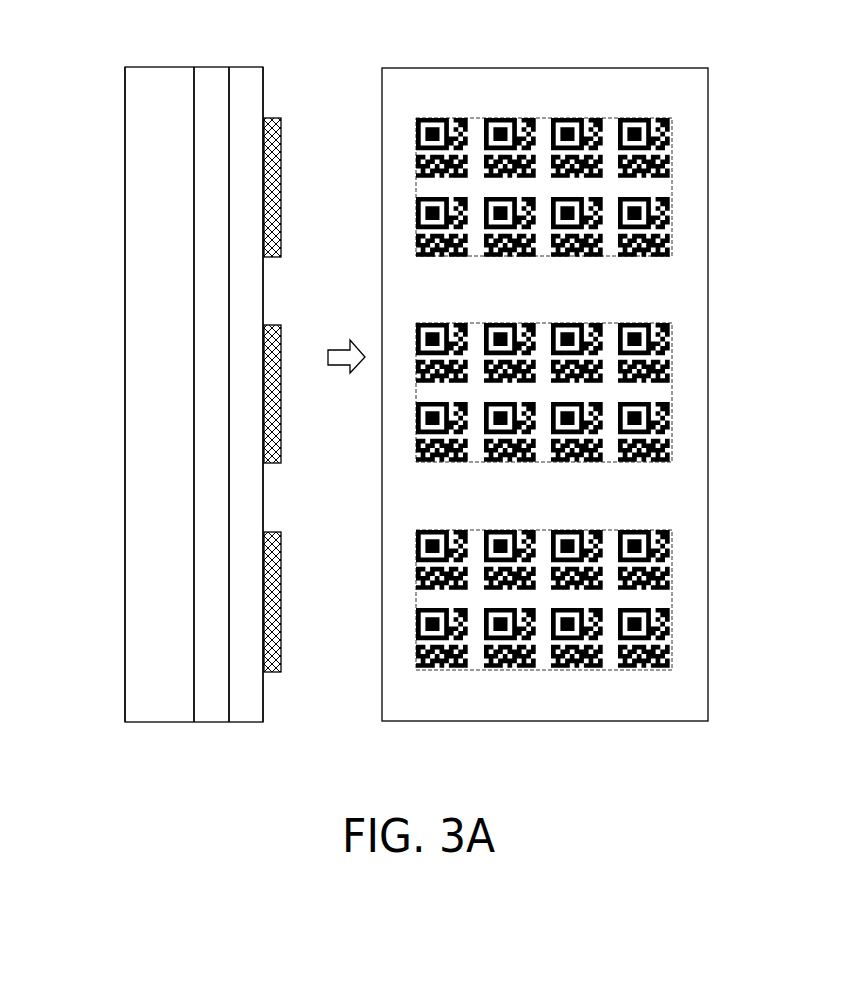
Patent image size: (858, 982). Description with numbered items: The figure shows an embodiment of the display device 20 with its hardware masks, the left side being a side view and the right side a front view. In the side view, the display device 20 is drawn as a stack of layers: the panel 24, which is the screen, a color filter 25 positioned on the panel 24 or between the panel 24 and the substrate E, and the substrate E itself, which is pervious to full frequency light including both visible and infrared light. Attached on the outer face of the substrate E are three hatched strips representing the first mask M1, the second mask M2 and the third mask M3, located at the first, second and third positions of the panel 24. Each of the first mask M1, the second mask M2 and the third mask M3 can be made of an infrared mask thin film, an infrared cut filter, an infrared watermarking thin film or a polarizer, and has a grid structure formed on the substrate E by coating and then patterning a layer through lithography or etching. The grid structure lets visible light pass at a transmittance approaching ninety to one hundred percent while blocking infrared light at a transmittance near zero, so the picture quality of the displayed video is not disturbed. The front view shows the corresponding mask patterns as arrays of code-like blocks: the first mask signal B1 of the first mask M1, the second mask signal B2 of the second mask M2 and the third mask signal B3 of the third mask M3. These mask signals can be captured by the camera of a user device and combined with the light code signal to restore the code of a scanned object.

The display device 20 is at (230, 58).
The panel 24 is at (143, 125).
The color filter 25 is at (205, 230).
The substrate E is at (248, 98).
The first mask M1 is at (281, 190).
The second mask M2 is at (281, 353).
The third mask M3 is at (281, 602).
The first mask signal B1 is at (672, 232).
The second mask signal B2 is at (672, 442).
The third mask signal B3 is at (672, 647).